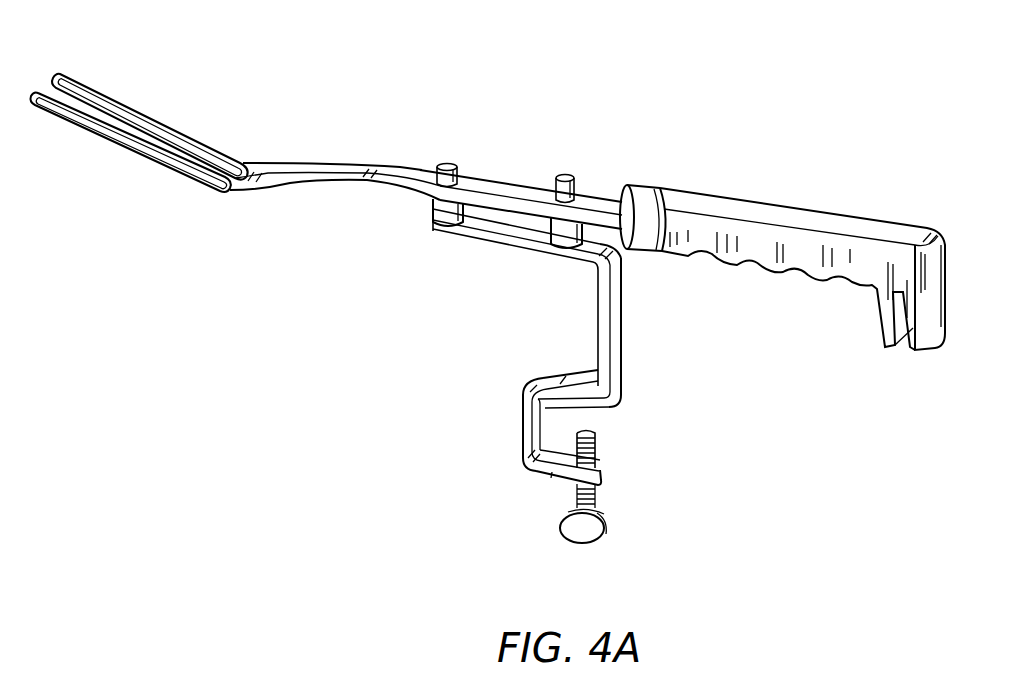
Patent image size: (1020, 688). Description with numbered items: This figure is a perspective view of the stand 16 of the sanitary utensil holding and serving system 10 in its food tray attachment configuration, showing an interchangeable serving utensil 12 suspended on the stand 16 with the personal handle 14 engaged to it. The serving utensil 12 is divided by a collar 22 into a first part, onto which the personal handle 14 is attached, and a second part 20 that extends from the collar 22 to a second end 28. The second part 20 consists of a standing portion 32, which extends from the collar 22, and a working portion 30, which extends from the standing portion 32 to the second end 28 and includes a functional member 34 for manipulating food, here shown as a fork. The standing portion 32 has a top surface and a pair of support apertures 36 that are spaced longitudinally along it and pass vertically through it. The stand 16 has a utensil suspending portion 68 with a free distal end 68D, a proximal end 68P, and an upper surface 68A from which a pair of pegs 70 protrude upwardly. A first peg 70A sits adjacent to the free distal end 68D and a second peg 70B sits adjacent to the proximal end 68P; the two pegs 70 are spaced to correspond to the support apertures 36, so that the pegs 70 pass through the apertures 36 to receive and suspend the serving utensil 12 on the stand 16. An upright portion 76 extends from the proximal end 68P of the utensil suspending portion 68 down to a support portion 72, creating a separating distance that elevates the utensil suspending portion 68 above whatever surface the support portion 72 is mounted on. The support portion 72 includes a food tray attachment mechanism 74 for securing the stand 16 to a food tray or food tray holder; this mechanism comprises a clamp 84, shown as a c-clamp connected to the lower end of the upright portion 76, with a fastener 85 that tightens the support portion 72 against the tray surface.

The sanitary utensil holding and serving system 10 is at (785, 86).
The interchangeable serving utensil 12 is at (343, 130).
The personal handle 14 is at (855, 226).
The stand 16 is at (463, 321).
The second part 20 is at (621, 154).
The collar 22 is at (659, 182).
The second end 28 is at (57, 77).
The working portion 30 is at (195, 144).
The standing portion 32 is at (530, 188).
The functional member 34 is at (133, 125).
The support apertures 36 is at (432, 200).
The utensil suspending portion 68 is at (487, 246).
The upper surface 68A is at (480, 225).
The free distal end 68D is at (432, 230).
The proximal end 68P is at (625, 256).
The pegs 70 is at (452, 168).
The first peg 70A is at (478, 164).
The second peg 70B is at (595, 182).
The support portion 72 is at (568, 384).
The food tray attachment mechanism 74 is at (521, 426).
The upright portion 76 is at (620, 330).
The clamp 84 is at (548, 479).
The fastener 85 is at (598, 538).